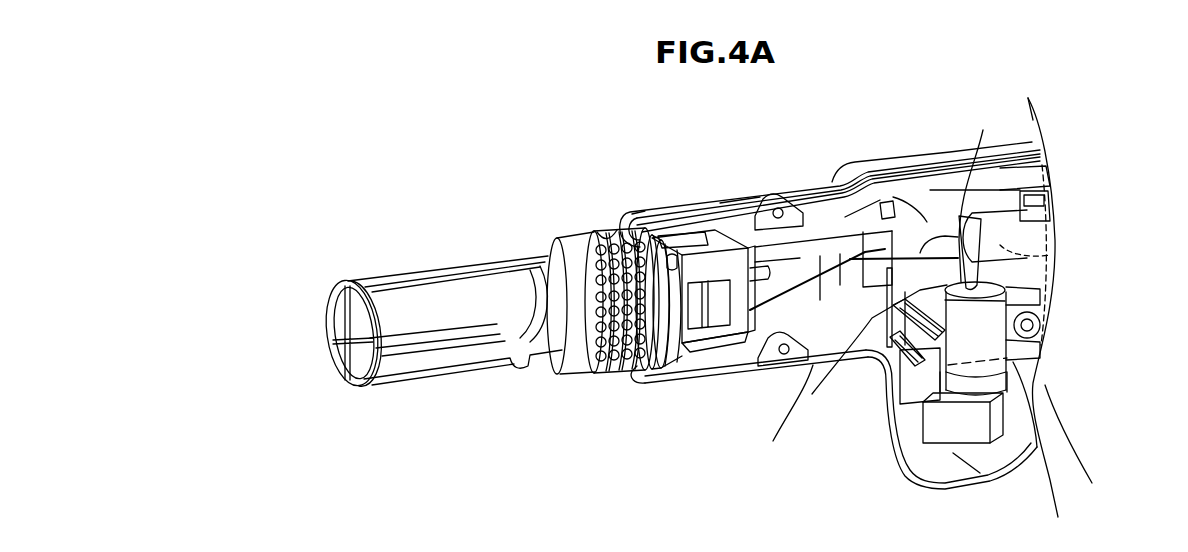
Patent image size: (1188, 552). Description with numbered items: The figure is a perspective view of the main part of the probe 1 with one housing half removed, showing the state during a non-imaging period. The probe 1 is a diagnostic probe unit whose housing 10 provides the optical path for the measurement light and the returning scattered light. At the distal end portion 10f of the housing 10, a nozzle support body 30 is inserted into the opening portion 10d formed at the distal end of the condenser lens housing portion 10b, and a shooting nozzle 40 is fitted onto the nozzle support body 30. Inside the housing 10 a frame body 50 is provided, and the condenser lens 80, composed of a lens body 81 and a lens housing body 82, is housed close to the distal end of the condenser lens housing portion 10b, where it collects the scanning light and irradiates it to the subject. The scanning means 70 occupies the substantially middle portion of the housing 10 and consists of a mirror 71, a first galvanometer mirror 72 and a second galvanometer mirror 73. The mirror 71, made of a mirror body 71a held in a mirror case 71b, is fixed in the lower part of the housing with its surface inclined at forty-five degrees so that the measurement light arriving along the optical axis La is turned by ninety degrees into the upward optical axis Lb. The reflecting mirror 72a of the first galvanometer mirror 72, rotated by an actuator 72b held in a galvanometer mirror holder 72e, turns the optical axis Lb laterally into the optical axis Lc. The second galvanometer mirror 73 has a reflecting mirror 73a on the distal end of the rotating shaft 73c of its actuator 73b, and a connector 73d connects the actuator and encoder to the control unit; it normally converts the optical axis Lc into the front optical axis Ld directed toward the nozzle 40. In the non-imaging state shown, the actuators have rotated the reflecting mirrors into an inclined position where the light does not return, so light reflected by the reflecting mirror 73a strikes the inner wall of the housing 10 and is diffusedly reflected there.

The probe 1 is at (346, 207).
The housing 10 is at (691, 206).
The condenser lens housing portion 10b is at (739, 204).
The opening portion 10d is at (598, 230).
The distal end portion 10f is at (645, 210).
The nozzle support body 30 is at (598, 375).
The shooting nozzle 40 is at (327, 326).
The frame body 50 is at (811, 258).
The scanning means 70 is at (983, 205).
The mirror 71 is at (935, 488).
The mirror body 71a is at (914, 438).
The mirror case 71b is at (888, 352).
The first galvanometer mirror 72 is at (848, 168).
The reflecting mirror 72a is at (910, 218).
The actuator 72b is at (1025, 218).
The galvanometer mirror holder 72e is at (1046, 170).
The second galvanometer mirror 73 is at (1045, 335).
The reflecting mirror 73a is at (1018, 283).
The actuator 73b is at (1040, 358).
The rotating shaft 73c is at (1041, 324).
The connector 73d is at (988, 425).
The condenser lens 80 is at (714, 368).
The lens body 81 is at (692, 372).
The lens housing body 82 is at (725, 352).
The optical axis La is at (1081, 448).
The optical axis Lb is at (875, 354).
The optical axis Lc is at (978, 189).
The optical axis Ld is at (790, 422).